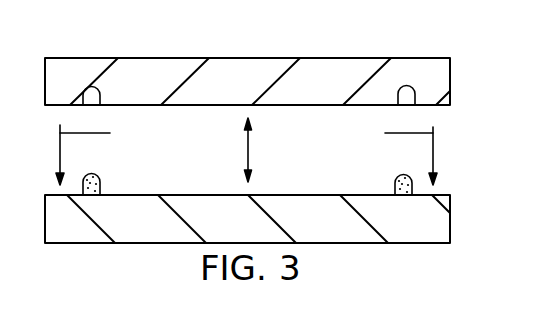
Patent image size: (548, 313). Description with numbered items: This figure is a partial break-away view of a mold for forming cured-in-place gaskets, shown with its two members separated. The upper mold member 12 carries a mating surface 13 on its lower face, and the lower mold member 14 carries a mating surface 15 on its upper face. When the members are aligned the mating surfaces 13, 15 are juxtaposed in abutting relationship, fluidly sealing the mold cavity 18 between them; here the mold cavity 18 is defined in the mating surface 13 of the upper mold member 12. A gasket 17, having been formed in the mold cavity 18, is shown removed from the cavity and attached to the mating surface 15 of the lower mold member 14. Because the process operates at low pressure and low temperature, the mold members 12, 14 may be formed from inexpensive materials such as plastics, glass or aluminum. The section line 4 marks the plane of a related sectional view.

The upper mold member 12 is at (383, 58).
The mating surface 13 is at (291, 105).
The lower mold member 14 is at (450, 228).
The mating surface 15 is at (178, 195).
The gasket 17 is at (102, 183).
The mold cavity 18 is at (91, 97).
The section line 4- 4 is at (248, 154).